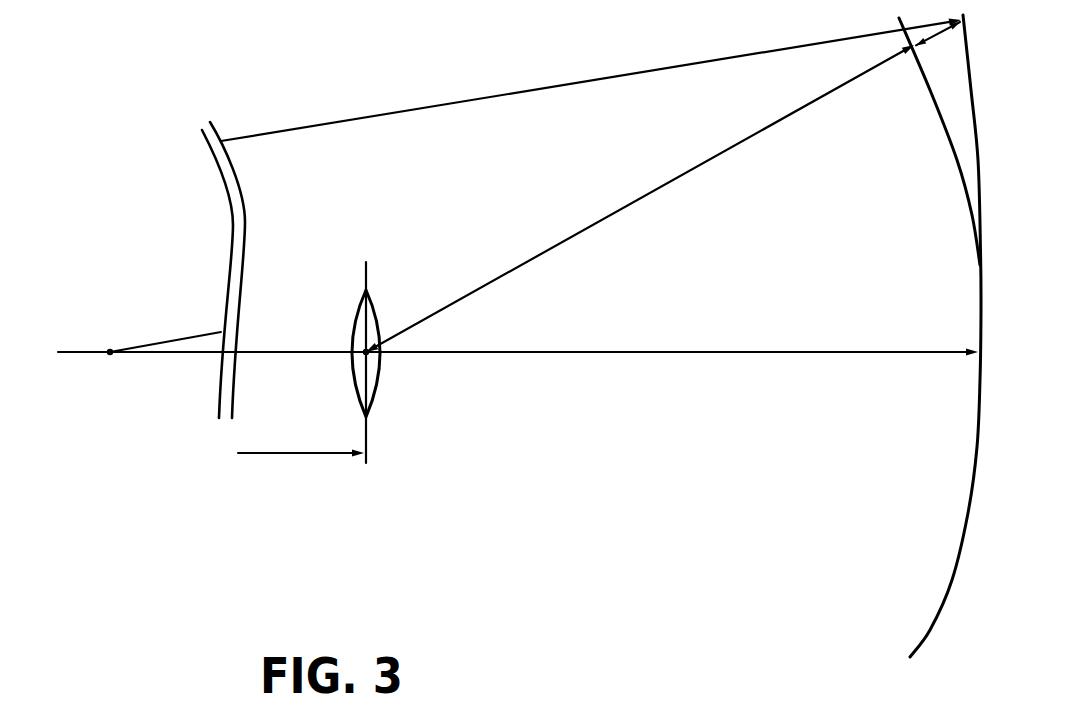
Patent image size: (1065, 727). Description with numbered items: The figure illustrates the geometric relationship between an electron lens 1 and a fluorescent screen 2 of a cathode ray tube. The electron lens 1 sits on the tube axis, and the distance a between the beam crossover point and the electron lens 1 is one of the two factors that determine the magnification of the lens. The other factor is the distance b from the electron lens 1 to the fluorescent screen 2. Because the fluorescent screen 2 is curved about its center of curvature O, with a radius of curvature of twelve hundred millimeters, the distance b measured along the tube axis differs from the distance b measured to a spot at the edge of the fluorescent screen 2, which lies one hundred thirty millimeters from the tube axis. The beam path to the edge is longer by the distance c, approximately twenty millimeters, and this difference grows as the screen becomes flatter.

The electron lens 1 is at (378, 378).
The fluorescent screen 2 is at (978, 141).
The center of curvature O is at (110, 355).
The distance between the crossover point and the electron lens a is at (301, 439).
The distance between the electron lens and the fluorescent screen b is at (640, 217).
The difference in distance at the screen edge c is at (938, 45).